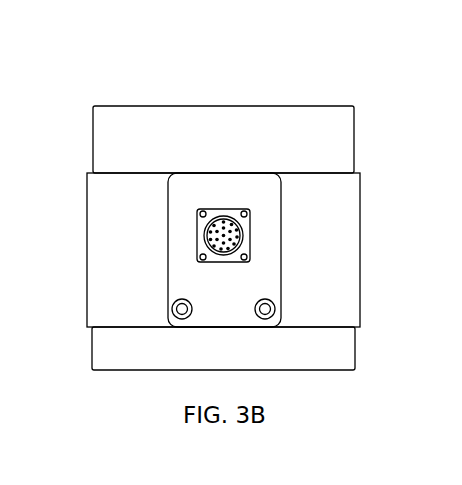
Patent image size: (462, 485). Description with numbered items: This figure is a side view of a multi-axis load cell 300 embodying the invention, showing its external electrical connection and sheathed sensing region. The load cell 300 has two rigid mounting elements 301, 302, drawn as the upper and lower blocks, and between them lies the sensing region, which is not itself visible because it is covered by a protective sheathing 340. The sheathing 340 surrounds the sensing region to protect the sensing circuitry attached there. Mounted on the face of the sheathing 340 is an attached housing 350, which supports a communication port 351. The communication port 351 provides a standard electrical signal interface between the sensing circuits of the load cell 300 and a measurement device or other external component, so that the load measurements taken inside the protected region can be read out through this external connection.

The multi-axis load cell 300 is at (110, 78).
The rigid mounting element 301 is at (340, 139).
The rigid mounting element 302 is at (342, 351).
The protective sheathing 340 is at (341, 255).
The attached housing 350 is at (250, 186).
The communication port 351 is at (213, 209).